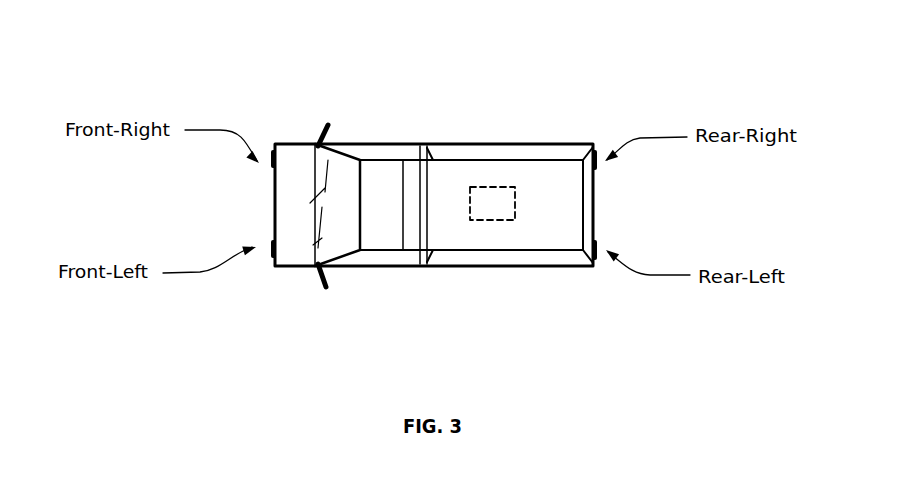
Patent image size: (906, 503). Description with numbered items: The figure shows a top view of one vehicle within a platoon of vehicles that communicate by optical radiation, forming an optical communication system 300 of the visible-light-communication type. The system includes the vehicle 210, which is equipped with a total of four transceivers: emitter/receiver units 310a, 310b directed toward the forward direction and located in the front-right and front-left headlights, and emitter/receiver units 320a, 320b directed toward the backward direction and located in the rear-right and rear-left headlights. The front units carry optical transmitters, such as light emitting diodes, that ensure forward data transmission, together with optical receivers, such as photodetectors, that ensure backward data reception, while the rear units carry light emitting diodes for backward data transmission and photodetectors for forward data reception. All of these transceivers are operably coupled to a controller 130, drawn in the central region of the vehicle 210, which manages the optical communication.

The optical communication system 300 is at (419, 59).
The controller 130 is at (493, 187).
The vehicle 210 is at (465, 267).
The emitter/receiver unit 310a is at (267, 147).
The emitter/receiver unit 310b is at (268, 258).
The emitter/receiver unit 320a is at (602, 155).
The emitter/receiver unit 320b is at (598, 258).